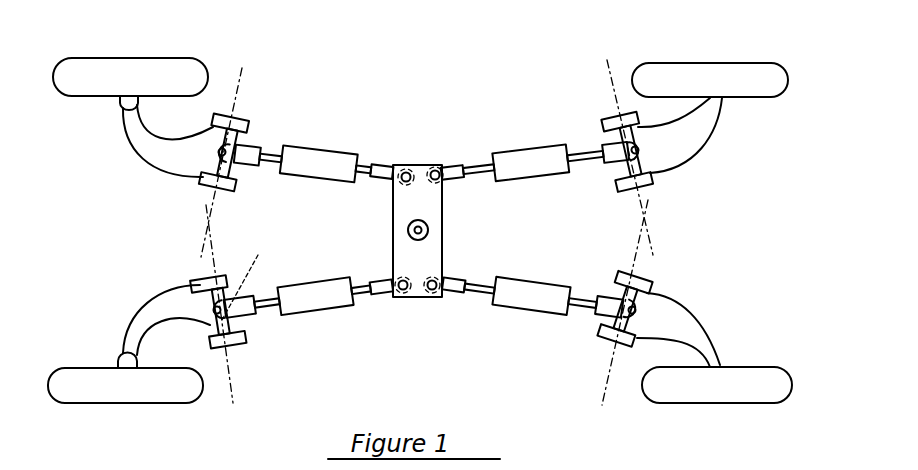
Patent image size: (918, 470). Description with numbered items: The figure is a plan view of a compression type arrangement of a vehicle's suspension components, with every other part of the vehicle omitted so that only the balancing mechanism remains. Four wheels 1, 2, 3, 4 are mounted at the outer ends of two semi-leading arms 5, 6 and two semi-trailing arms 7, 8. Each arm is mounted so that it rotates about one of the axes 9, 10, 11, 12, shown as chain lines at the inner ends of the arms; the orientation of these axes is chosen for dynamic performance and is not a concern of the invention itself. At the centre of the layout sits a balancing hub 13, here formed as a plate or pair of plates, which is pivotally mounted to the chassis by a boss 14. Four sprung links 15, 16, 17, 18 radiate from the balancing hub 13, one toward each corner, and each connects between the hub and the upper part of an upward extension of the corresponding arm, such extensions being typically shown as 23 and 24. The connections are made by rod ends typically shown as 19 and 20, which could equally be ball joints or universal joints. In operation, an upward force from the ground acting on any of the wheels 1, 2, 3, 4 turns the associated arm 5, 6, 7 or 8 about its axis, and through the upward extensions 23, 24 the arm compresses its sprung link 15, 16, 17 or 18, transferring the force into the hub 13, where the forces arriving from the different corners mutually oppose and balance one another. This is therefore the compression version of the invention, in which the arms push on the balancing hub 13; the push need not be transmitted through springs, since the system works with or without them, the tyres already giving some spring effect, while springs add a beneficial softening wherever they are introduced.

The wheel 1 is at (63, 378).
The wheel 2 is at (75, 70).
The wheel 3 is at (752, 78).
The wheel 4 is at (770, 380).
The semi-leading arm 5 is at (150, 310).
The semi-leading arm 6 is at (147, 147).
The semi-trailing arm 7 is at (700, 133).
The semi-trailing arm 8 is at (677, 317).
The axis 9 is at (233, 363).
The axis 10 is at (242, 83).
The axis 11 is at (605, 73).
The axis 12 is at (608, 382).
The balancing hub 13 is at (442, 247).
The boss 14 is at (426, 223).
The sprung link 15 is at (307, 153).
The sprung link 16 is at (508, 155).
The sprung link 17 is at (520, 285).
The sprung link 18 is at (300, 283).
The rod end 19 is at (254, 281).
The rod end 20 is at (393, 280).
The upward extension 23 is at (207, 318).
The upward extension 24 is at (603, 317).